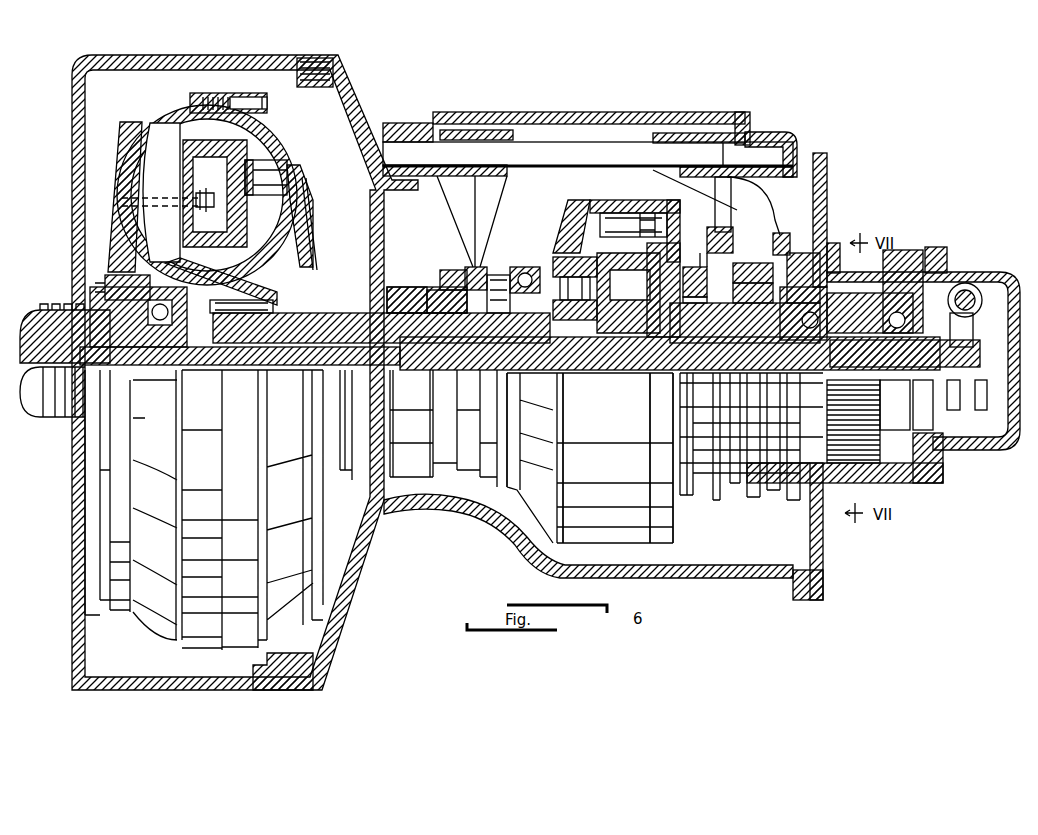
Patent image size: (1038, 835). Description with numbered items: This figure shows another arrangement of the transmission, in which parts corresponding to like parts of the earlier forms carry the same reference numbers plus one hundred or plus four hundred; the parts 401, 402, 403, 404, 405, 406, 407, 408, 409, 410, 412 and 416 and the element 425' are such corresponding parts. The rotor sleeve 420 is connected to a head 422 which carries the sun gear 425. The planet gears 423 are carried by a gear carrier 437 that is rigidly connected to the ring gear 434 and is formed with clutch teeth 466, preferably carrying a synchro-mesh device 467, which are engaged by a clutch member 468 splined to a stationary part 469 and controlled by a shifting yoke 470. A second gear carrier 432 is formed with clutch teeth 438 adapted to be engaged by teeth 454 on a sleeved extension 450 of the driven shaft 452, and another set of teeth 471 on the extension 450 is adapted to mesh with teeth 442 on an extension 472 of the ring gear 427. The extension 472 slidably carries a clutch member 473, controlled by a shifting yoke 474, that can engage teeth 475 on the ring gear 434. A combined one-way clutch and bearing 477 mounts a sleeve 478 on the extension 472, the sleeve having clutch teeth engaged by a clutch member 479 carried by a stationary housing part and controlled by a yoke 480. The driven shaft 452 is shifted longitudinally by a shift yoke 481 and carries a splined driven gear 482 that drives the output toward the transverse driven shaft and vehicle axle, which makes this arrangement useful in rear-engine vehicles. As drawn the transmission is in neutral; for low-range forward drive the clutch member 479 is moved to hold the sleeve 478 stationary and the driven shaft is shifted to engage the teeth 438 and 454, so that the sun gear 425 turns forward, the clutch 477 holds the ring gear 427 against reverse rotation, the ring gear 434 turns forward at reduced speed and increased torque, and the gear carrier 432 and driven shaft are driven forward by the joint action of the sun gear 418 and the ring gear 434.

The input shaft 401 is at (37, 310).
The clutch housing wall 402 is at (127, 170).
The spring retainer 403 is at (220, 128).
The clutch piston 404 is at (262, 262).
The clutch plate 405 is at (291, 213).
The pin 406 is at (237, 318).
The lever 407 is at (266, 180).
The gear 408 is at (136, 352).
The bearing 409 is at (152, 348).
The gear 410 is at (178, 365).
The drum 412 is at (313, 363).
The clutch ring 416 is at (167, 100).
The sun gear 418 is at (620, 373).
The rotor sleeve 420 is at (267, 337).
The head 422 is at (533, 337).
The planet gears 423 is at (572, 225).
The sun gear 425 is at (579, 441).
The gear 425' is at (418, 415).
The ring gear 427 is at (550, 247).
The gear carrier 432 is at (642, 218).
The ring gear 434 is at (622, 217).
The gear carrier 437 is at (520, 267).
The clutch teeth 438 is at (700, 340).
The teeth 442 is at (777, 370).
The sleeved extension 450 is at (720, 350).
The driven shaft 452 is at (980, 423).
The teeth 454 is at (710, 345).
The clutch teeth 466 is at (497, 293).
The synchro-mesh device 467 is at (453, 283).
The clutch member 468 is at (440, 290).
The stationary part 469 is at (407, 287).
The shifting yoke 470 is at (457, 183).
The teeth 471 is at (827, 243).
The extension 472 is at (697, 252).
The clutch member 473 is at (697, 255).
The shifting yoke 474 is at (733, 230).
The teeth 475 is at (697, 264).
The combined one-way clutch and bearing 477 is at (753, 254).
The sleeve 478 is at (753, 273).
The clutch member 479 is at (790, 243).
The yoke 480 is at (762, 208).
The shift yoke 481 is at (967, 333).
The driven gear 482 is at (893, 277).